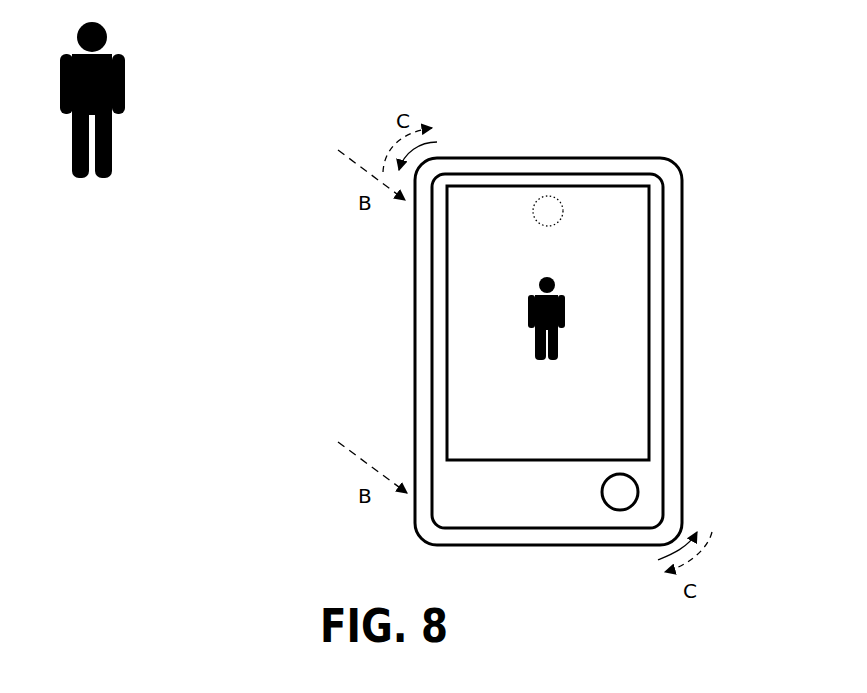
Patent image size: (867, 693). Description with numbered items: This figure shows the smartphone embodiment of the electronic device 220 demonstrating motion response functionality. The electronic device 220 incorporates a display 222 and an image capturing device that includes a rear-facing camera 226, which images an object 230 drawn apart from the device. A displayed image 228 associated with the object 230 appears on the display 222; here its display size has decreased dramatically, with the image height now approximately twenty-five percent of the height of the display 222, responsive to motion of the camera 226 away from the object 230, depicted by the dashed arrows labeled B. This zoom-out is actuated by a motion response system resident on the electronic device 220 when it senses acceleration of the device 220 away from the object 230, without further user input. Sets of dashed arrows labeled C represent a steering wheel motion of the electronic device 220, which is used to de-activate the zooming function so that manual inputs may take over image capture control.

The electronic device 220 is at (730, 172).
The display device 222 is at (615, 423).
The rear-facing camera 226 is at (548, 196).
The displayed image 228 is at (563, 297).
The object 230 is at (120, 57).